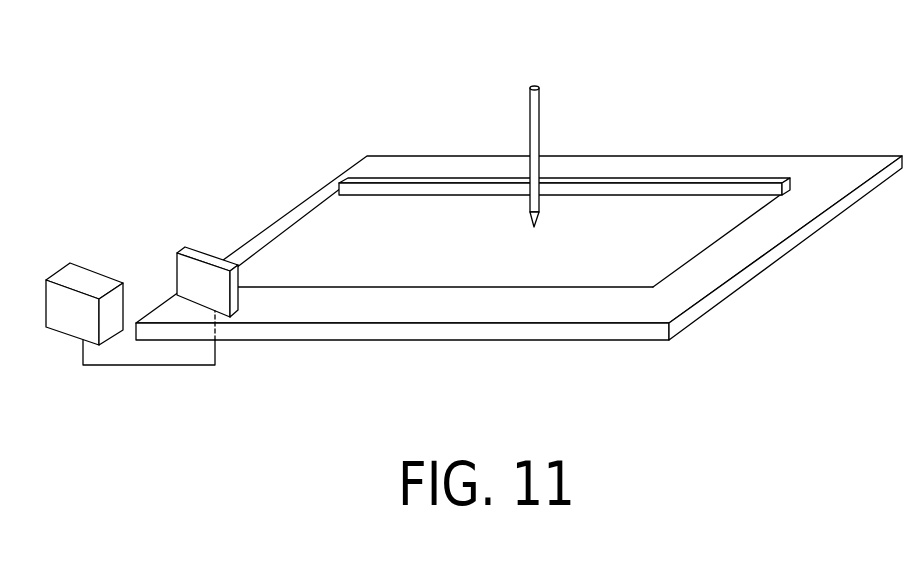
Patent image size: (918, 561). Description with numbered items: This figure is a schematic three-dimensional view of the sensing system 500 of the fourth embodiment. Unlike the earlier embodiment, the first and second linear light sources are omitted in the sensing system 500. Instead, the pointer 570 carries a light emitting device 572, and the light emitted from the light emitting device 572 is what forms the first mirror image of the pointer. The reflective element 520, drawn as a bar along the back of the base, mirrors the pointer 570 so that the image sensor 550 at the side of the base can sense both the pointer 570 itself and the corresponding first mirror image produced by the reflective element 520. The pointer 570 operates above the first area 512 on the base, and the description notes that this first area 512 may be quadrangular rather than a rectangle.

The sensing system 500 is at (807, 387).
The first area 512 is at (518, 248).
The reflective element 520 is at (697, 182).
The image sensor 550 is at (178, 249).
The pointer 570 is at (533, 87).
The light emitting device 572 is at (538, 221).